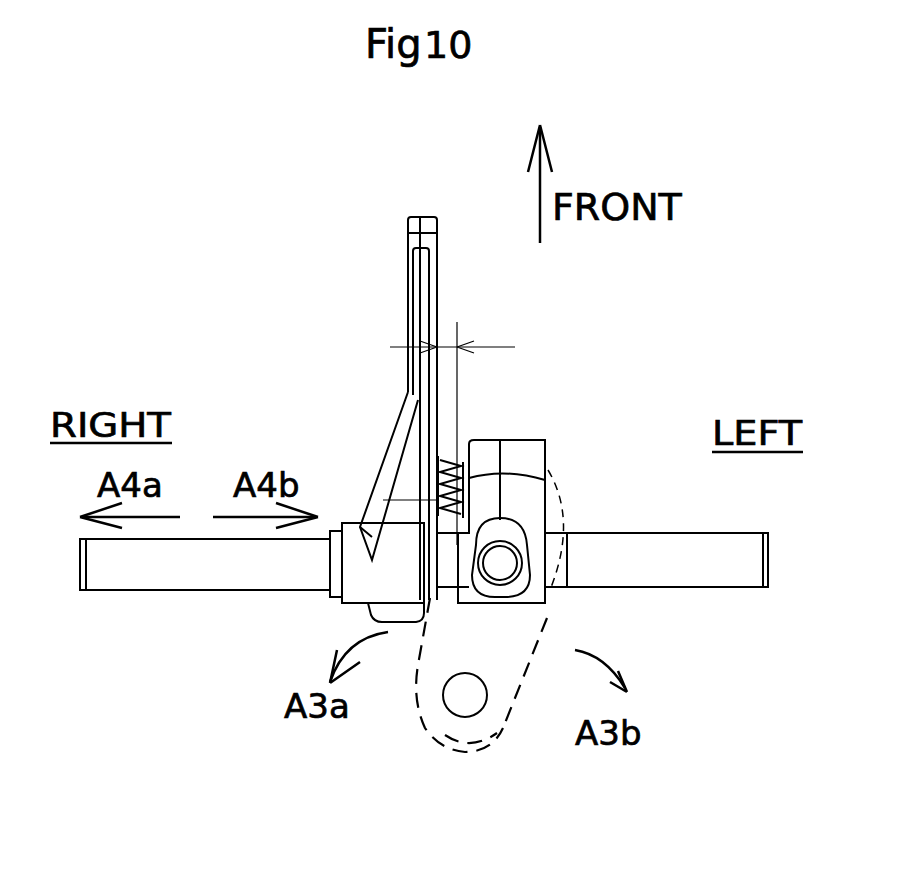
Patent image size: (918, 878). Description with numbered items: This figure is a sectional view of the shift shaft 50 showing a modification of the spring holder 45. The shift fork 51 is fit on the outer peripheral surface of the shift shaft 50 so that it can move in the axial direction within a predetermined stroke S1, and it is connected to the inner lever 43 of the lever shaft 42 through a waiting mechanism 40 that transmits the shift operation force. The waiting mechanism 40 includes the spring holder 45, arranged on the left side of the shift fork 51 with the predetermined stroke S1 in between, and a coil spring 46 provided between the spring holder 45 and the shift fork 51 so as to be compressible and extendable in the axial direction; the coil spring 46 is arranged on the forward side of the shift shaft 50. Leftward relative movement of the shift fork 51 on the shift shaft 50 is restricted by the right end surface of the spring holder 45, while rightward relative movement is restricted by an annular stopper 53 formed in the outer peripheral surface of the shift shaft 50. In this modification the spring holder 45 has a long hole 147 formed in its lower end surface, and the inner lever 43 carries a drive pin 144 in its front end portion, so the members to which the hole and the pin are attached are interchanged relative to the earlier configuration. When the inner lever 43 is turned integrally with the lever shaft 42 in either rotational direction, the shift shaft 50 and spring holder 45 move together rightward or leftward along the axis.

The waiting mechanism 40 is at (595, 388).
The lever shaft 42 is at (463, 697).
The inner lever 43 is at (525, 680).
The spring holder 45 is at (545, 457).
The coil spring 46 is at (452, 470).
The shift shaft 50 is at (167, 567).
The shift fork 51 is at (420, 314).
The annular stopper 53 is at (338, 578).
The drive pin 144 is at (500, 565).
The long hole 147 is at (542, 516).
The predetermined stroke S1 is at (461, 426).